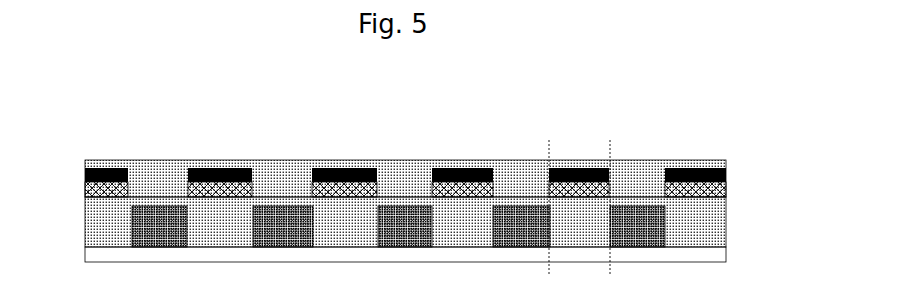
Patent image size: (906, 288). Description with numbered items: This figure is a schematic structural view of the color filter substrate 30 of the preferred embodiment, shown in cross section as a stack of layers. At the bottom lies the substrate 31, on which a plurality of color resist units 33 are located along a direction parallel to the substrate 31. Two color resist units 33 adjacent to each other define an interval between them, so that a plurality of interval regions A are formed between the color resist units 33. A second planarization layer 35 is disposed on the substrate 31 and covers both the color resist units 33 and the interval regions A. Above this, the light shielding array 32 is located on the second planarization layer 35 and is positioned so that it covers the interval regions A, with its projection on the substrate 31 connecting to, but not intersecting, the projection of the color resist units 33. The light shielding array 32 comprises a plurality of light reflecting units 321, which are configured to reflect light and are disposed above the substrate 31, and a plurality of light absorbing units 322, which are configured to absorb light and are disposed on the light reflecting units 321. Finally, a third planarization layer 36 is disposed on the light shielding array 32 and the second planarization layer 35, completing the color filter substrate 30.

The color filter substrate 30 is at (422, 180).
The substrate 31 is at (85, 253).
The light shielding array 32 is at (452, 180).
The light reflecting unit 321 is at (726, 187).
The light absorbing unit 322 is at (726, 172).
The color resist unit 33 is at (637, 205).
The second planarization layer 35 is at (726, 227).
The third planarization layer 36 is at (708, 160).
The interval region A is at (583, 218).